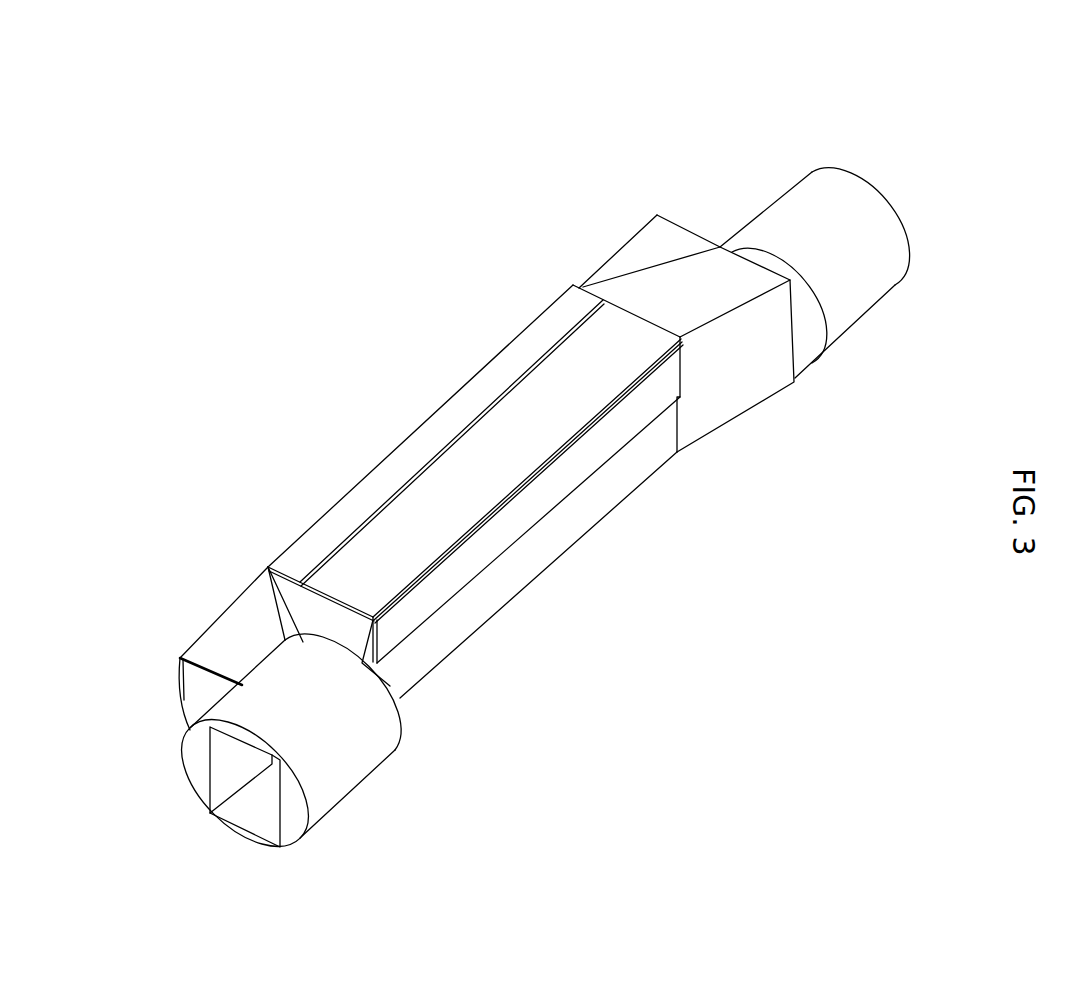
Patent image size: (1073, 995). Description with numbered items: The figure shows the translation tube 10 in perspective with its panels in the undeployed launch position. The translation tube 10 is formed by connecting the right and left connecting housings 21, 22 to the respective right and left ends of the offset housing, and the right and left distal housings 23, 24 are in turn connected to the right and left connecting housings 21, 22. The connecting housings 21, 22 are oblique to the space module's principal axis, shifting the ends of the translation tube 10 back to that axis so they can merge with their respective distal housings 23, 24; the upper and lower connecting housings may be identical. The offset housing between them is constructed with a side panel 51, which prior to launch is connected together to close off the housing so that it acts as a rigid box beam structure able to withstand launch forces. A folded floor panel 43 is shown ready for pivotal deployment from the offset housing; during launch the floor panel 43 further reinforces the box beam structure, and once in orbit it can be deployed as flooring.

The translation tube 10 is at (733, 785).
The right connecting housing 21 is at (755, 390).
The left connecting housing 22 is at (217, 633).
The right distal housing 23 is at (778, 240).
The left distal housing 24 is at (342, 752).
The floor panel 43 is at (434, 432).
The side panel 51 is at (533, 550).